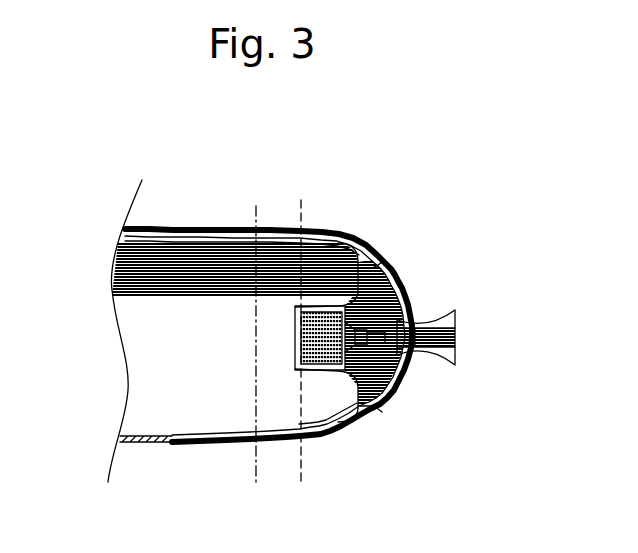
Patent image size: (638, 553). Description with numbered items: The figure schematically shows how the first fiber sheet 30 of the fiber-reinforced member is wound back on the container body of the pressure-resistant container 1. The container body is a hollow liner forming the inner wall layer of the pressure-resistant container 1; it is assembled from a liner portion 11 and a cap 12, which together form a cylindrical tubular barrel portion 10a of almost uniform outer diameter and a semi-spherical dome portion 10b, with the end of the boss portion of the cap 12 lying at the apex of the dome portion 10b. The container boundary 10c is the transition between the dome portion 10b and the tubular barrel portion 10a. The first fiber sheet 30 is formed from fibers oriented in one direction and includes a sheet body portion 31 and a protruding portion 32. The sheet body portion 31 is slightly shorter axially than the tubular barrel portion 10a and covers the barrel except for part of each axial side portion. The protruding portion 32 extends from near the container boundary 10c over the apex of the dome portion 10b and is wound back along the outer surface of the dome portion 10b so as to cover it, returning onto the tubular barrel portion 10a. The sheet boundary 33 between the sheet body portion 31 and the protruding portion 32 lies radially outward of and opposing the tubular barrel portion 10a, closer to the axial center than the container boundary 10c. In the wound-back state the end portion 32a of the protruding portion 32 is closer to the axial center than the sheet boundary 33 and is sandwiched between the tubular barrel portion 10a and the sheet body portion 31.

The pressure-resistant container 1 is at (397, 209).
The tubular barrel portion 10a is at (148, 443).
The dome portion 10b is at (323, 432).
The container boundary 10c is at (306, 180).
The liner portion 11 is at (330, 410).
The cap 12 is at (380, 375).
The first fiber sheet 30 is at (190, 228).
The sheet body portion 31 is at (150, 228).
The protruding portion 32 is at (378, 246).
The end portion 32a is at (220, 448).
The sheet boundary 33 is at (254, 329).